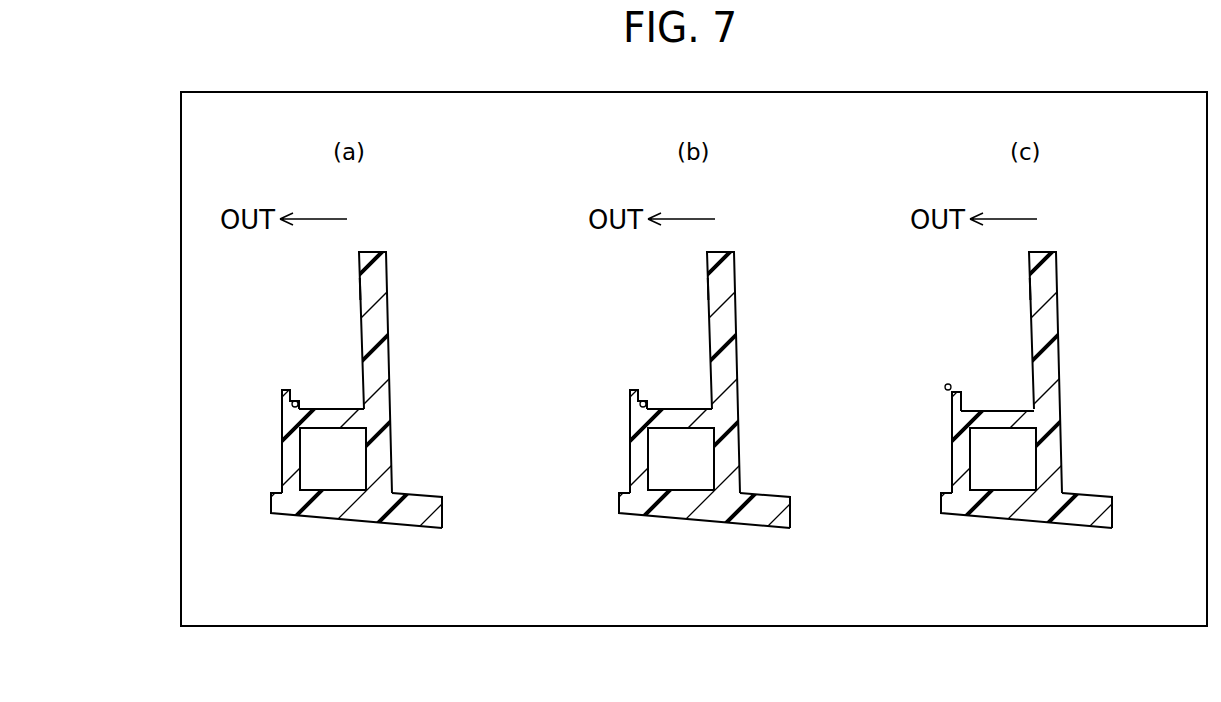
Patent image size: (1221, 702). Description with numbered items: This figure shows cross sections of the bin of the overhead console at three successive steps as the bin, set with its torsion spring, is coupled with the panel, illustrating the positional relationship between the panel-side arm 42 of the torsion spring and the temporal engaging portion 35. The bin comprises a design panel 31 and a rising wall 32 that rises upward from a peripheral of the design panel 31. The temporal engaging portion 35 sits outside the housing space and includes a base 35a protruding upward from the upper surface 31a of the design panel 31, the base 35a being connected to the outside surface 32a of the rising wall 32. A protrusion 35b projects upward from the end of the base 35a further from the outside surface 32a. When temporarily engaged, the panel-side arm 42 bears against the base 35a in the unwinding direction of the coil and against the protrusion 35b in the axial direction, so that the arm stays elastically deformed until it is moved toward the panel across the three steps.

The design panel 31 is at (365, 513).
The upper surface 31a is at (421, 489).
The rising wall 32 is at (377, 367).
The outside surface 32a is at (359, 291).
The temporal engaging portion 35 is at (378, 458).
The base 35a is at (332, 420).
The protrusion 35b is at (313, 366).
The panel-side arm 42 is at (299, 402).